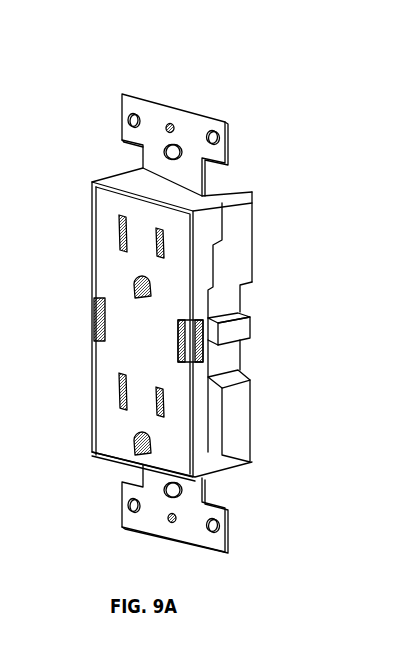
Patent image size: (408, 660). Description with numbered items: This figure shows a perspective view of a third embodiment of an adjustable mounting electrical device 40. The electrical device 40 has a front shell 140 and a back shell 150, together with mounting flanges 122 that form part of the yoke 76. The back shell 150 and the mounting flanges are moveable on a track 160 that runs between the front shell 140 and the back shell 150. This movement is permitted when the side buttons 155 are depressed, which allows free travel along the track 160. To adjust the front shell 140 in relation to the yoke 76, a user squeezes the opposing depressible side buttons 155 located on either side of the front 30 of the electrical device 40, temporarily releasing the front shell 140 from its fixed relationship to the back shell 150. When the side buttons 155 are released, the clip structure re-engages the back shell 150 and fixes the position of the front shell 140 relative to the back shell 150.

The front 30 is at (175, 413).
The electrical device 40 is at (218, 452).
The yoke 76 is at (240, 120).
The mounting flanges 122 is at (121, 323).
The front shell 140 is at (200, 233).
The back shell 150 is at (245, 257).
The side buttons 155 is at (193, 348).
The track 160 is at (233, 328).